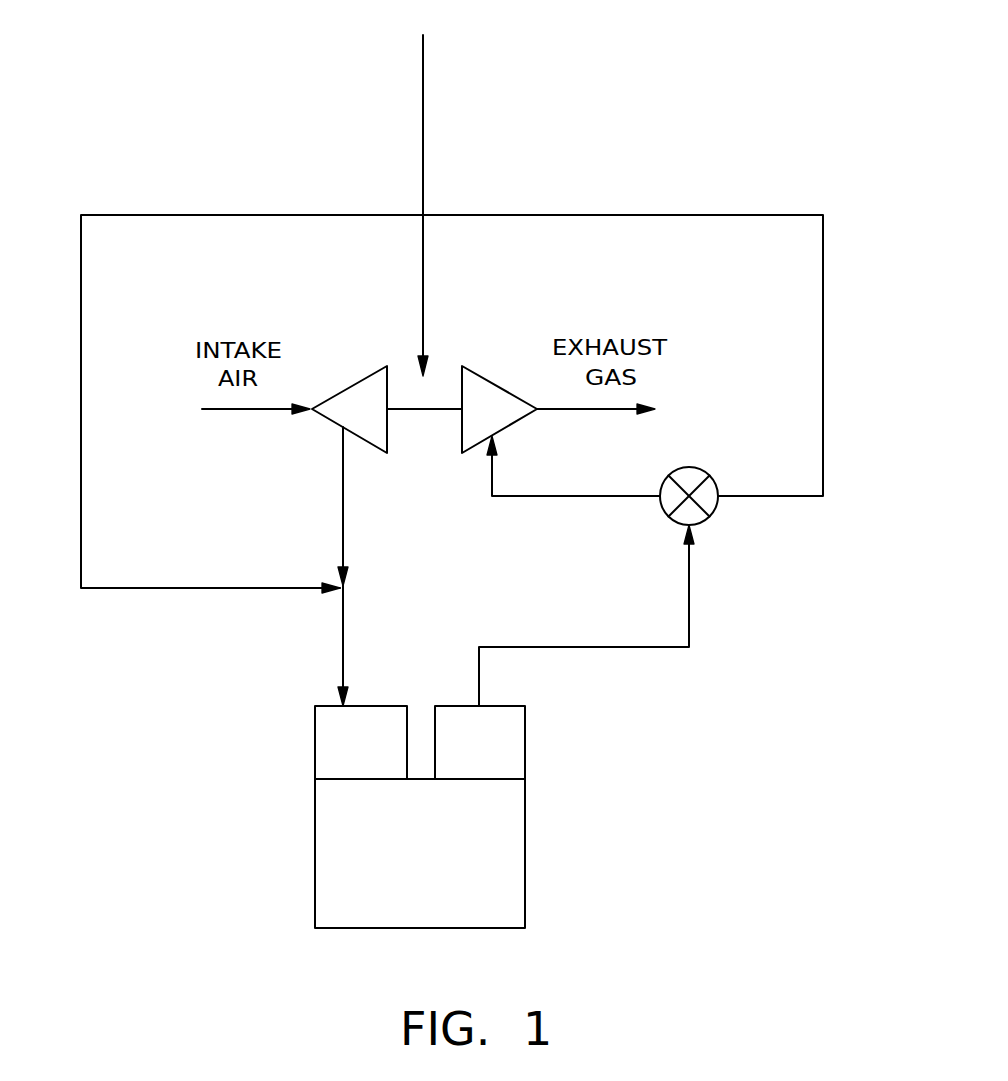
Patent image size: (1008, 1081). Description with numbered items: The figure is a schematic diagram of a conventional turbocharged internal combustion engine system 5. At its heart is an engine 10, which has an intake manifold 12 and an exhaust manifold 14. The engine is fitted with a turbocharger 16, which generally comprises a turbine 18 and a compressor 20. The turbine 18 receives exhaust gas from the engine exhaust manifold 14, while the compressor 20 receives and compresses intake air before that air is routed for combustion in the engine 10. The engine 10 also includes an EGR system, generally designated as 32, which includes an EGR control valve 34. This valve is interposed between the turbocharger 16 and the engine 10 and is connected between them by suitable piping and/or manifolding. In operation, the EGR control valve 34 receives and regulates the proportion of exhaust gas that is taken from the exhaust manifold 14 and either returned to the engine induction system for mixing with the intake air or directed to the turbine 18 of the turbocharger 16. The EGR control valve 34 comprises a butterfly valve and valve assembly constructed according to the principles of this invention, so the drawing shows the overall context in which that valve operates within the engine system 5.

The turbocharged internal combustion engine system 5 is at (717, 147).
The engine 10 is at (512, 861).
The intake manifold 12 is at (335, 737).
The exhaust manifold 14 is at (515, 737).
The turbocharger 16 is at (423, 128).
The turbine 18 is at (503, 385).
The compressor 20 is at (360, 378).
The EGR system 32 is at (829, 349).
The EGR control valve 34 is at (701, 527).